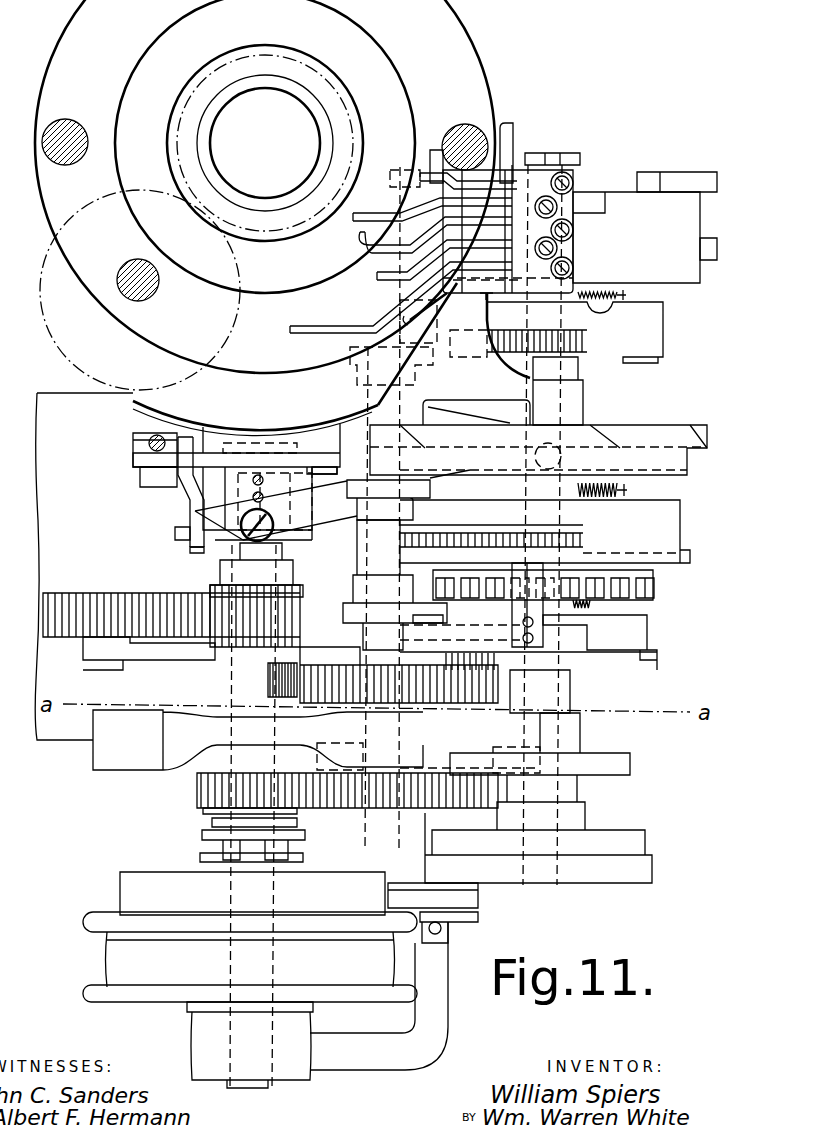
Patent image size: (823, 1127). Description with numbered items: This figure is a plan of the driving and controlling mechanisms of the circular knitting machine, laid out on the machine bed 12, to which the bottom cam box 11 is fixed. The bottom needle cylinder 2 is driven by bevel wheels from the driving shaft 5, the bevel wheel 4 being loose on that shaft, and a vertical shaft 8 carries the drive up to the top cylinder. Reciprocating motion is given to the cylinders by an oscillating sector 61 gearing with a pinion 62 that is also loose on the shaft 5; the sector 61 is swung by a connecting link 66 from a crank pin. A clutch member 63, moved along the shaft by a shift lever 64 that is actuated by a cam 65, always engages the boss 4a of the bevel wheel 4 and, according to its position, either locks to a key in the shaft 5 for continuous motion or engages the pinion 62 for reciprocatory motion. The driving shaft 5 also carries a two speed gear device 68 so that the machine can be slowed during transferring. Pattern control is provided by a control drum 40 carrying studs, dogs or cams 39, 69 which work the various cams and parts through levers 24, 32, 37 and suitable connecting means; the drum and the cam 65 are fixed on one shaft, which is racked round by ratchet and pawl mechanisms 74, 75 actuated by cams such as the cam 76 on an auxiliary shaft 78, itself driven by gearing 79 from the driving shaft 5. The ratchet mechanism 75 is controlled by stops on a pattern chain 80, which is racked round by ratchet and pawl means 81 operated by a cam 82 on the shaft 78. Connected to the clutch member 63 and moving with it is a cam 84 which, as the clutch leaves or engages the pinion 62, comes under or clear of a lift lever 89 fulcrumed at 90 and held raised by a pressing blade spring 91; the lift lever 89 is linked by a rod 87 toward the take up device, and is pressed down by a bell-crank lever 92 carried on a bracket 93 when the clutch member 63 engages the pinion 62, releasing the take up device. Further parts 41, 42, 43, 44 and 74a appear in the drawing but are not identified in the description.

The bottom needle cylinder 2 is at (326, 139).
The bevel wheel 4 is at (68, 352).
The boss of bevel wheel 4a is at (210, 490).
The driving shaft 5 is at (230, 820).
The vertical shaft 8 is at (150, 290).
The bottom cam box 11 is at (261, 58).
The machine bed 12 is at (265, 186).
The lever 24 is at (355, 262).
The lever 32 is at (358, 235).
The lever 37 is at (506, 172).
The stud, dog or cam 39 is at (404, 170).
The control drum 40 is at (373, 300).
The hub 41 is at (552, 403).
The base plate 42 is at (543, 872).
The bracket 43 is at (394, 976).
The contact 44 is at (447, 618).
The oscillating sector 61 is at (90, 603).
The pinion 62 is at (282, 637).
The clutch member 63 is at (230, 492).
The shift lever 64 is at (338, 516).
The cam 65 is at (597, 432).
The connecting link 66 is at (180, 661).
The two speed gear device 68 is at (250, 980).
The stud, dog or cam 69 is at (395, 212).
The ratchet and pawl mechanism 74 is at (633, 325).
The band end 74a is at (530, 365).
The ratchet and pawl mechanism 75 is at (630, 635).
The cam 76 is at (352, 352).
The auxiliary shaft 78 is at (375, 560).
The gearing 79 is at (340, 783).
The pattern chain 80 is at (640, 604).
The ratchet and pawl means 81 is at (640, 525).
The cam 82 is at (430, 489).
The cam 84 is at (260, 440).
The rod 87 is at (150, 440).
The lift lever 89 is at (160, 470).
The fulcrum 90 is at (330, 472).
The pressing blade spring 91 is at (133, 457).
The bell-crank lever 92 is at (197, 552).
The bracket 93 is at (177, 545).